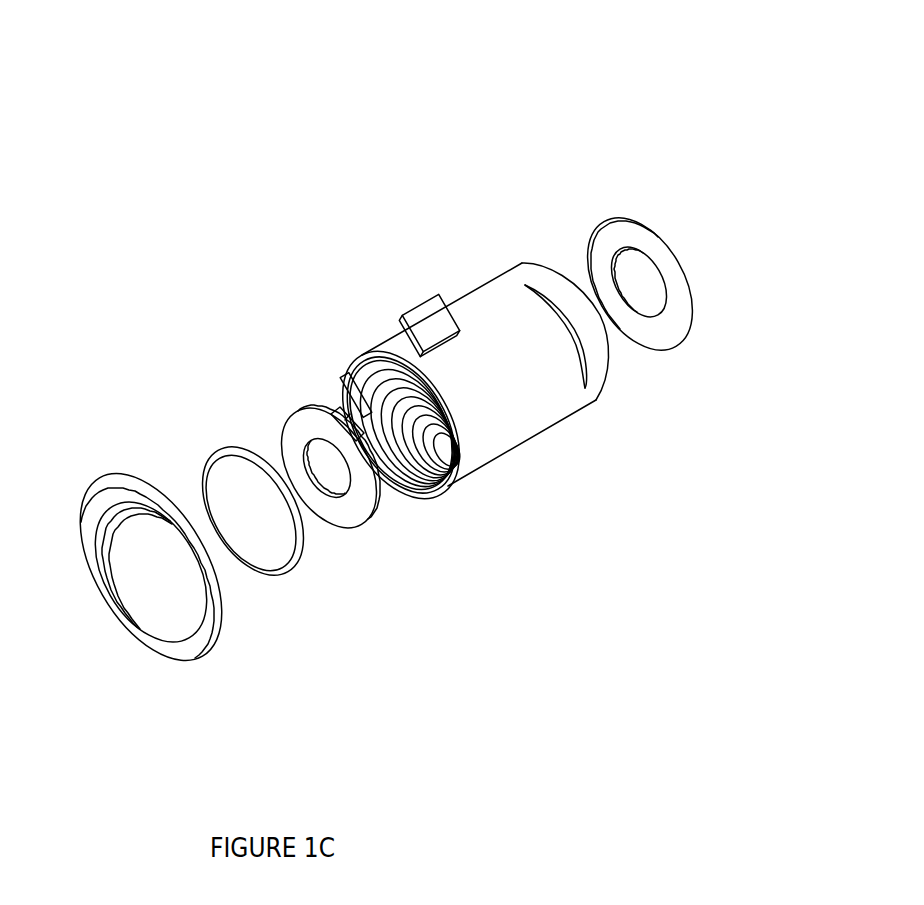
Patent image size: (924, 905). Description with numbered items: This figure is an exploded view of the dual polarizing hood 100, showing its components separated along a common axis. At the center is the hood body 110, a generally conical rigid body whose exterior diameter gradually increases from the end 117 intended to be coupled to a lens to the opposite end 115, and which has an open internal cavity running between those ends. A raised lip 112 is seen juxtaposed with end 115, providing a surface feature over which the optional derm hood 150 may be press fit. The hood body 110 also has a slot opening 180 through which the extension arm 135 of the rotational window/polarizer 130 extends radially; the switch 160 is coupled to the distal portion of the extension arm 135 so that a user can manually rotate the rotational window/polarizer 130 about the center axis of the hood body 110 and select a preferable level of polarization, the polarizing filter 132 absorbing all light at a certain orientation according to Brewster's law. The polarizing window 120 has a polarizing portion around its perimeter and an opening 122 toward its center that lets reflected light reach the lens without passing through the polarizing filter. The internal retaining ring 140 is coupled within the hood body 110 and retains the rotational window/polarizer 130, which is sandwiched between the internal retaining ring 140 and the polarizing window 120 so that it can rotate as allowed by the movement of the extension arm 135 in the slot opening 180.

The dual polarizing hood 100 is at (780, 130).
The hood body 110 is at (528, 395).
The raised lip 112 is at (457, 420).
The end 115 is at (465, 478).
The end 117 is at (617, 365).
The polarizing window 120 is at (668, 305).
The opening 122 is at (648, 290).
The rotational window/polarizer 130 is at (353, 513).
The polarizing filter 132 is at (332, 412).
The extension arm 135 is at (363, 421).
The internal retaining ring 140 is at (270, 537).
The derm hood 150 is at (227, 613).
The switch 160 is at (425, 317).
The slot opening 180 is at (566, 262).